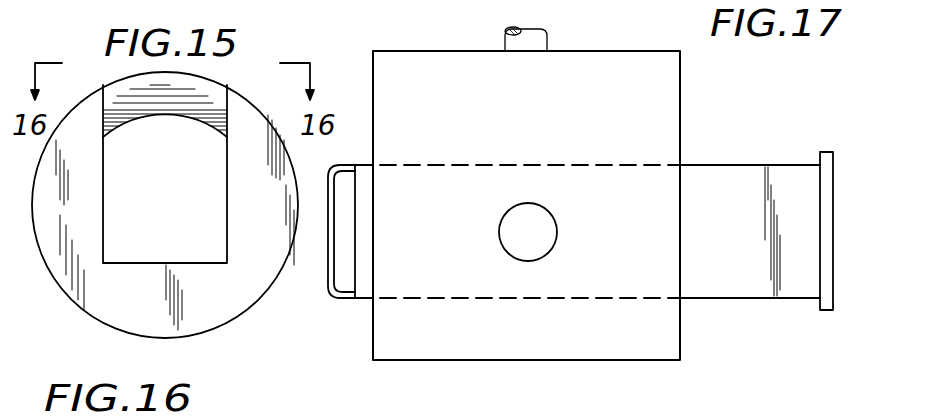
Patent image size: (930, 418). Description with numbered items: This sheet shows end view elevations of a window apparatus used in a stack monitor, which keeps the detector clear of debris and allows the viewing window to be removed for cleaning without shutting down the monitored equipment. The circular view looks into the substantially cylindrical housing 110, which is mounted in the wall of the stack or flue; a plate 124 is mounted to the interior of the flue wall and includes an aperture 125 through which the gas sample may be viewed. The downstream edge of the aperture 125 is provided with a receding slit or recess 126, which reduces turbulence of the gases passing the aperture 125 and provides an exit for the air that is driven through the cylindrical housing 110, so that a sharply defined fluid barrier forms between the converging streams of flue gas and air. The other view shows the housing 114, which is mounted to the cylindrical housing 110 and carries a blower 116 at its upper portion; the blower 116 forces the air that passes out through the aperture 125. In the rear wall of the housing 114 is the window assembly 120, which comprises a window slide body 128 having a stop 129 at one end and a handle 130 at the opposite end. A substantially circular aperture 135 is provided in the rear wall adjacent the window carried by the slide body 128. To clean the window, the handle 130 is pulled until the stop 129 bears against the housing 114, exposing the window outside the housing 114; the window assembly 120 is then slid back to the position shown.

In FIG. 15, the cylindrical housing 110 is at (186, 120).
In FIG. 17, the housing 114 is at (683, 109).
In FIG. 17, the blower 116 is at (505, 35).
In FIG. 17, the window assembly 120 is at (763, 304).
In FIG. 15, the plate 124 is at (218, 333).
In FIG. 15, the aperture 125 is at (205, 202).
In FIG. 15, the recess 126 is at (212, 92).
In FIG. 17, the window slide body 128 is at (725, 165).
In FIG. 17, the stop 129 is at (835, 207).
In FIG. 17, the handle 130 is at (325, 290).
In FIG. 17, the circular aperture 135 is at (548, 223).